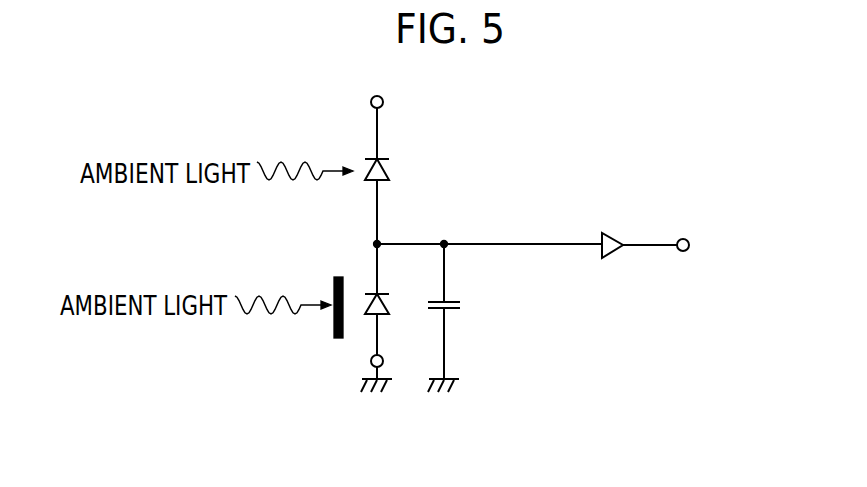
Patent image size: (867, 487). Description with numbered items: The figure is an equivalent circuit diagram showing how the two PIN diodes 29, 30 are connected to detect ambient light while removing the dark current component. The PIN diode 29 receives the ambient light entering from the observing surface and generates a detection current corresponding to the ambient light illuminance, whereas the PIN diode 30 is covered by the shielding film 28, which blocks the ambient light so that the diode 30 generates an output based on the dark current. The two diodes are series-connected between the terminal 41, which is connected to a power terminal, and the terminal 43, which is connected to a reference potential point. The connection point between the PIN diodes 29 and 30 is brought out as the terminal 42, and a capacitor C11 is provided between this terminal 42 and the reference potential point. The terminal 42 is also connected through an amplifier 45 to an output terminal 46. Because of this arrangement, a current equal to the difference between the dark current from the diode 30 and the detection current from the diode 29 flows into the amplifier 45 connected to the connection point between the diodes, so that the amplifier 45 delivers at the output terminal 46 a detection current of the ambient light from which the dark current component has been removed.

The shielding film 28 is at (337, 276).
The PIN diode 29 is at (368, 172).
The PIN diode 30 is at (364, 308).
The terminal 41 is at (383, 102).
The terminal 42 is at (379, 241).
The terminal 43 is at (383, 360).
The amplifier 45 is at (612, 233).
The output terminal 46 is at (683, 252).
The capacitor C11 is at (462, 305).